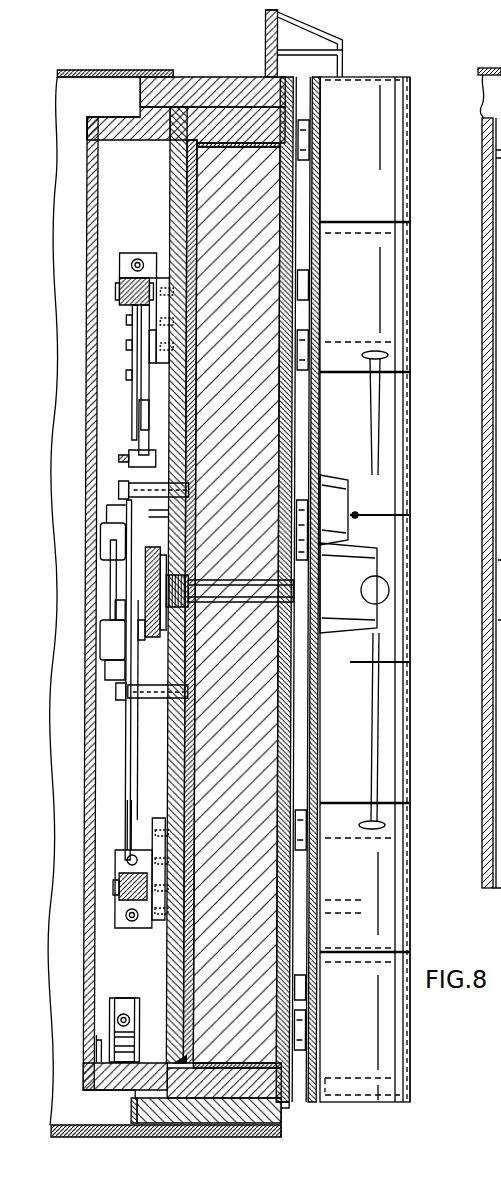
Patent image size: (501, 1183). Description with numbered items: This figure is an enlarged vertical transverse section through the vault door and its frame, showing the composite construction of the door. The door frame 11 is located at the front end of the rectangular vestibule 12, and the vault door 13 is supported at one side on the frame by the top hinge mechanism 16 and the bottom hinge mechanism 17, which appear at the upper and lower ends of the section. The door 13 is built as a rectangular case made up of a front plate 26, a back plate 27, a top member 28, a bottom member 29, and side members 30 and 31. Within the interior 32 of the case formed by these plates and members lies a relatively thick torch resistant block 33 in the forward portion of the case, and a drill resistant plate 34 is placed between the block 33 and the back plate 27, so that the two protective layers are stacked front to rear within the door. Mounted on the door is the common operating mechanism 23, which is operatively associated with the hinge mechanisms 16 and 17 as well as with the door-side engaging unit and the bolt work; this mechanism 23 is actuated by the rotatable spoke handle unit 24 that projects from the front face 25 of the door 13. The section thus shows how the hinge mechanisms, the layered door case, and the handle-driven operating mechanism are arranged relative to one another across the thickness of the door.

The door frame 11 is at (133, 70).
The vestibule 12 is at (202, 76).
The vault door 13 is at (284, 1106).
The top hinge mechanism 16 is at (372, 150).
The bottom hinge mechanism 17 is at (366, 1047).
The common operating mechanism 23 is at (300, 512).
The spoke handle unit 24 is at (380, 537).
The front face 25 is at (320, 772).
The front plate 26 is at (290, 992).
The back plate 27 is at (175, 965).
The top member 28 is at (222, 117).
The bottom member 29 is at (190, 1095).
The side member 30 is at (142, 657).
The side member 31 is at (229, 591).
The interior of the door case 32 is at (240, 1070).
The torch resistant block 33 is at (220, 195).
The drill resistant plate 34 is at (186, 181).